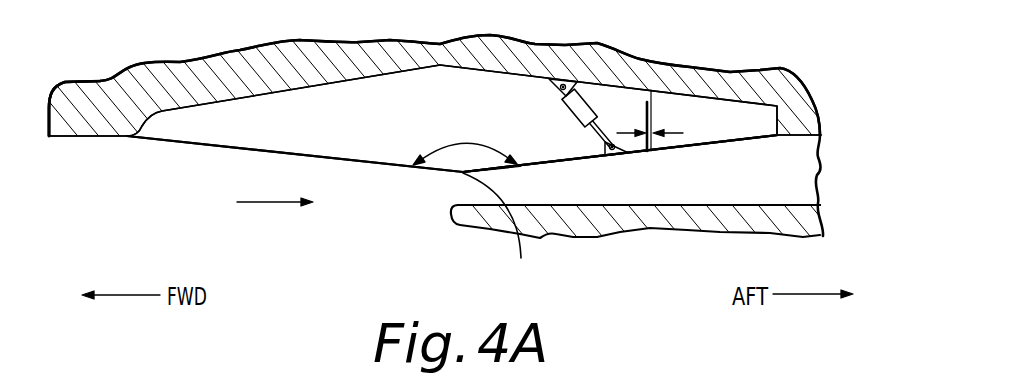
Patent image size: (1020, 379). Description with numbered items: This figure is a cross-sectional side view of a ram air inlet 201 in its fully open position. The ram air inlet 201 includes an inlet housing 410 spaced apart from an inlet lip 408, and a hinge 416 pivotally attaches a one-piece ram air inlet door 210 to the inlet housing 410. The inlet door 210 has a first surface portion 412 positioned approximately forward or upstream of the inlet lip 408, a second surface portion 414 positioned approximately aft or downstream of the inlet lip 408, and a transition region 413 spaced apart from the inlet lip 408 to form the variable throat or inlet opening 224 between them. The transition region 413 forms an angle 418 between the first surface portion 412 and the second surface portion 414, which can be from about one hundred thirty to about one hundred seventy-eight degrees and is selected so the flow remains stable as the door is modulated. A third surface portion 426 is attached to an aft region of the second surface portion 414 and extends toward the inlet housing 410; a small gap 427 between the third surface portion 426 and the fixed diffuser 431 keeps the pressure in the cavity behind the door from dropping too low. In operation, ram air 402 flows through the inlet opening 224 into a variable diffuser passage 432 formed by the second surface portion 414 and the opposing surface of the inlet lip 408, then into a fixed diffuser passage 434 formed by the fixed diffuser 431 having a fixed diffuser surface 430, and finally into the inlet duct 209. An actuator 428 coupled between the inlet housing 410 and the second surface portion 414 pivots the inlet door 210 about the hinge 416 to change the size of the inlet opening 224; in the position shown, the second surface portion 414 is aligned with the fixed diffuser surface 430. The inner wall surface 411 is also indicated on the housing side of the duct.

The ram air inlet 201 is at (373, 250).
The inlet duct 209 is at (817, 170).
The ram air inlet door 210 is at (213, 145).
The inlet opening 224 is at (450, 176).
The ram air 402 is at (270, 203).
The inlet lip 408 is at (453, 212).
The inlet housing 410 is at (275, 98).
The inner surface of outer wall 411 is at (184, 141).
The first surface portion 412 is at (320, 157).
The transition region 413 is at (497, 229).
The second surface portion 414 is at (568, 162).
The hinge 416 is at (128, 137).
The angle 418 is at (463, 138).
The third surface portion 426 is at (645, 122).
The gap 427 is at (678, 132).
The actuator 428 is at (565, 110).
The fixed diffuser surface 430 is at (692, 148).
The fixed diffuser 431 is at (748, 133).
The variable diffuser passage 432 is at (593, 186).
The fixed diffuser passage 434 is at (733, 173).